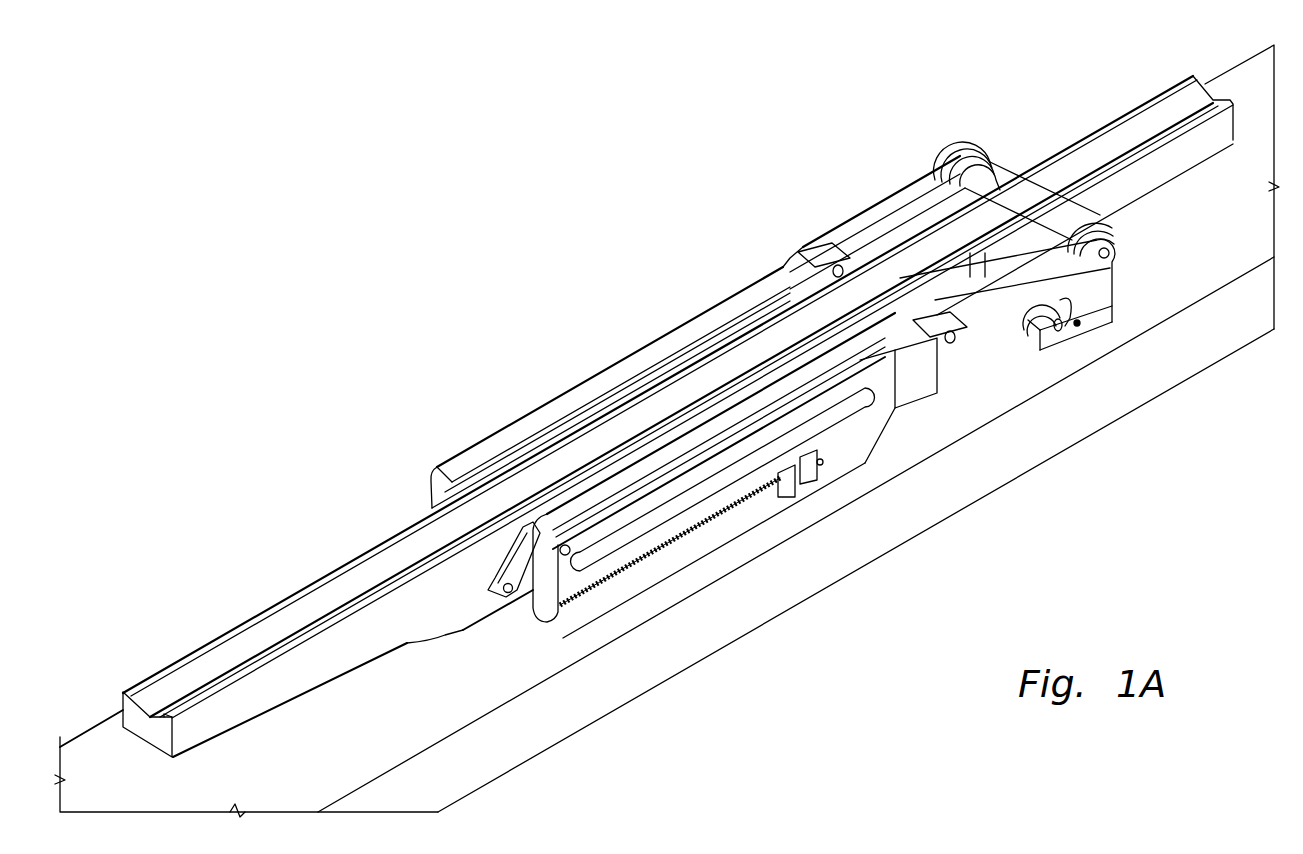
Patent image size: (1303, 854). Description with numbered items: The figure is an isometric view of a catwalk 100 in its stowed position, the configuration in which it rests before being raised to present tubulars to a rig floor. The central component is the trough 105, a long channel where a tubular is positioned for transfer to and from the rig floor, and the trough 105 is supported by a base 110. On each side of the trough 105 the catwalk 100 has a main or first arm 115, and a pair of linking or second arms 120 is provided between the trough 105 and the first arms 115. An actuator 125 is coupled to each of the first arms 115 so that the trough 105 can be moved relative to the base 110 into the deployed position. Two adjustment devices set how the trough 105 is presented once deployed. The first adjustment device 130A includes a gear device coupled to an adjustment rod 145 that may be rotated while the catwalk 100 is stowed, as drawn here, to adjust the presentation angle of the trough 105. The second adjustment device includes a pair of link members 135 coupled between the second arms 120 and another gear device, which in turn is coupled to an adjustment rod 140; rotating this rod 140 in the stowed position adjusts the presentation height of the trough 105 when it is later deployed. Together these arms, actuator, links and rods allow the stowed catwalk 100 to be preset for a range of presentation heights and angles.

The catwalk 100 is at (330, 224).
The trough 105 is at (160, 738).
The base 110 is at (693, 652).
The first arms 115 is at (717, 302).
The second arms 120 is at (515, 450).
The actuator 125 is at (1032, 333).
The first adjustment device 130A is at (697, 541).
The link members 135 is at (490, 590).
The adjustment rod 140 is at (1100, 338).
The adjustment rod 145 is at (834, 474).